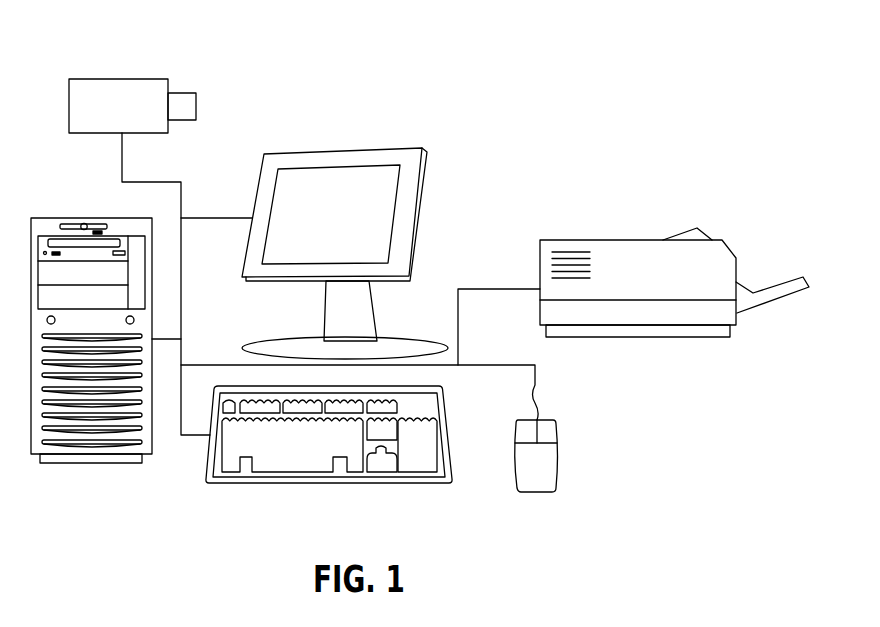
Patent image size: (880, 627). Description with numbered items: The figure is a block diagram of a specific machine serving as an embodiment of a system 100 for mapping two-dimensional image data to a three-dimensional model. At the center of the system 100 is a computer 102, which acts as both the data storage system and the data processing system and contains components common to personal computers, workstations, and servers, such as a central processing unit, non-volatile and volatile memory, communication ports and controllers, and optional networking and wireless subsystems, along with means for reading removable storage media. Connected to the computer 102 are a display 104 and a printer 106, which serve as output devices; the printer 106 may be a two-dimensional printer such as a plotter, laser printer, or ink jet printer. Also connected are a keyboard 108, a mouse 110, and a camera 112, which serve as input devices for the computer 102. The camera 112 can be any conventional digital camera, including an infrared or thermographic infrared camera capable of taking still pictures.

The system 100 is at (336, 41).
The computer 102 is at (93, 216).
The display 104 is at (340, 151).
The printer 106 is at (638, 240).
The keyboard 108 is at (329, 485).
The mouse 110 is at (538, 495).
The camera 112 is at (118, 80).